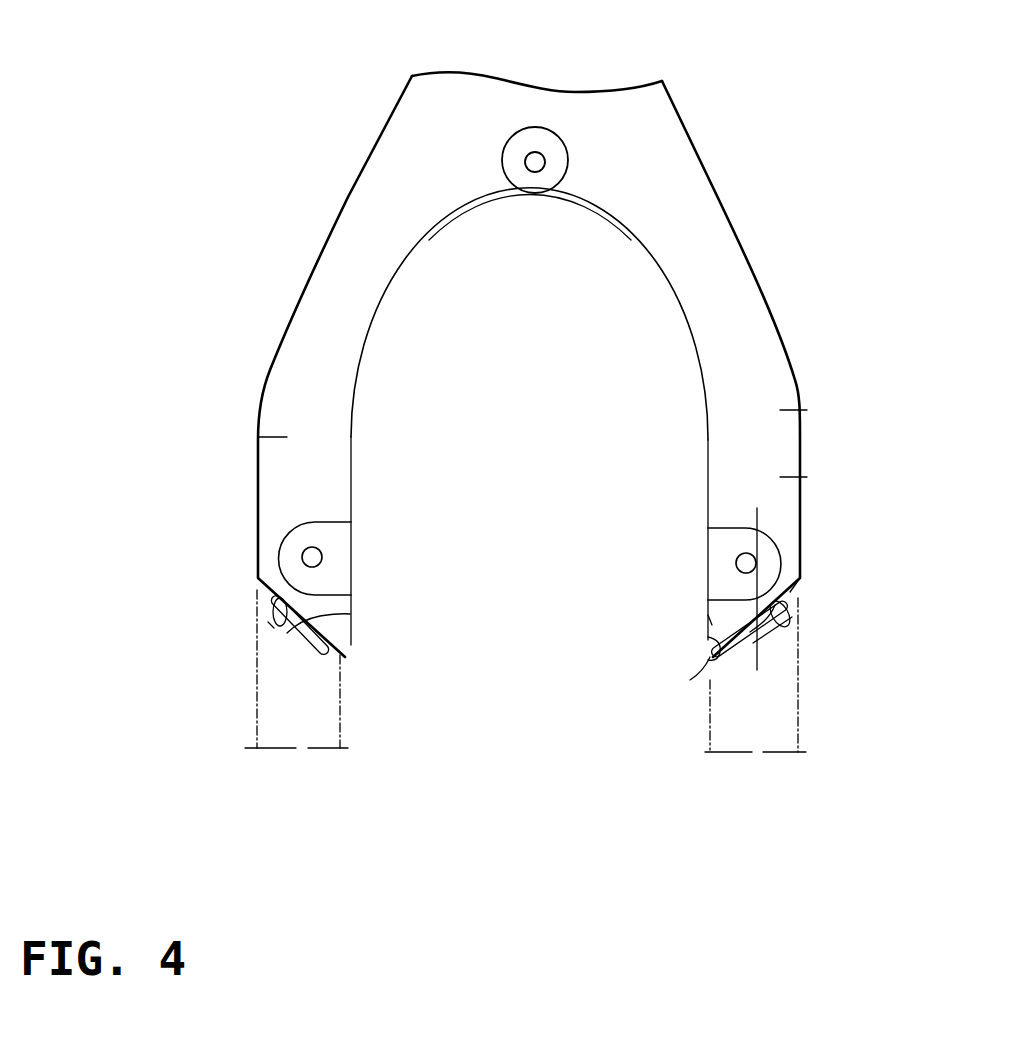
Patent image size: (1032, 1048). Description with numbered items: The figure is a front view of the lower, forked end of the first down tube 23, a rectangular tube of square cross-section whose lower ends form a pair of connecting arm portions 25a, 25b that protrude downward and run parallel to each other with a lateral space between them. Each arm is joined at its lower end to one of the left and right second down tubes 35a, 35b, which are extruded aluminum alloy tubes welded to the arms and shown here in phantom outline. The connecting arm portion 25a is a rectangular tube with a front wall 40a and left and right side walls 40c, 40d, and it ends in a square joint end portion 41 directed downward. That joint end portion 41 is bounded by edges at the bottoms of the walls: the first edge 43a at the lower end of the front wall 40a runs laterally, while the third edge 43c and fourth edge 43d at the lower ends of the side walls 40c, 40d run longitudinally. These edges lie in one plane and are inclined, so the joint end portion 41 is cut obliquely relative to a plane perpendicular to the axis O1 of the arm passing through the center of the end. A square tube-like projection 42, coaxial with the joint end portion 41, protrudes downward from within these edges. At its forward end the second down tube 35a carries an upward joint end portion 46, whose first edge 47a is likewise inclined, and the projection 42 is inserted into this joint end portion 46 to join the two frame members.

The first down tube 23 is at (596, 113).
The connecting arm portion 25a is at (800, 410).
The connecting arm portion 25b is at (258, 437).
The front wall 40a is at (800, 477).
The left side wall 40c is at (800, 560).
The right side wall 40d is at (707, 512).
The joint end portion 41 is at (350, 614).
The projection 42 is at (292, 634).
The first edge 43a is at (735, 621).
The third edge 43c is at (795, 592).
The fourth edge 43d is at (708, 643).
The joint end portion 46 is at (268, 622).
The first edge 47a is at (800, 672).
The second down tube 35a is at (759, 735).
The second down tube 35b is at (302, 728).
The axis O1 is at (757, 520).